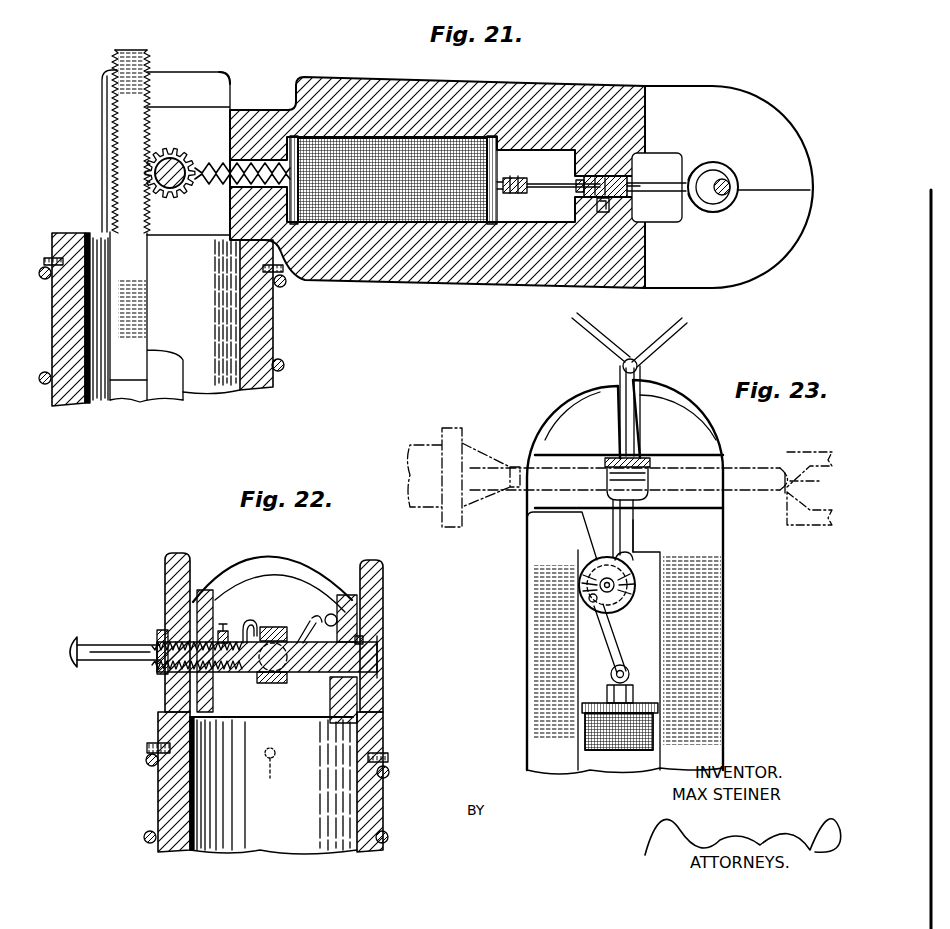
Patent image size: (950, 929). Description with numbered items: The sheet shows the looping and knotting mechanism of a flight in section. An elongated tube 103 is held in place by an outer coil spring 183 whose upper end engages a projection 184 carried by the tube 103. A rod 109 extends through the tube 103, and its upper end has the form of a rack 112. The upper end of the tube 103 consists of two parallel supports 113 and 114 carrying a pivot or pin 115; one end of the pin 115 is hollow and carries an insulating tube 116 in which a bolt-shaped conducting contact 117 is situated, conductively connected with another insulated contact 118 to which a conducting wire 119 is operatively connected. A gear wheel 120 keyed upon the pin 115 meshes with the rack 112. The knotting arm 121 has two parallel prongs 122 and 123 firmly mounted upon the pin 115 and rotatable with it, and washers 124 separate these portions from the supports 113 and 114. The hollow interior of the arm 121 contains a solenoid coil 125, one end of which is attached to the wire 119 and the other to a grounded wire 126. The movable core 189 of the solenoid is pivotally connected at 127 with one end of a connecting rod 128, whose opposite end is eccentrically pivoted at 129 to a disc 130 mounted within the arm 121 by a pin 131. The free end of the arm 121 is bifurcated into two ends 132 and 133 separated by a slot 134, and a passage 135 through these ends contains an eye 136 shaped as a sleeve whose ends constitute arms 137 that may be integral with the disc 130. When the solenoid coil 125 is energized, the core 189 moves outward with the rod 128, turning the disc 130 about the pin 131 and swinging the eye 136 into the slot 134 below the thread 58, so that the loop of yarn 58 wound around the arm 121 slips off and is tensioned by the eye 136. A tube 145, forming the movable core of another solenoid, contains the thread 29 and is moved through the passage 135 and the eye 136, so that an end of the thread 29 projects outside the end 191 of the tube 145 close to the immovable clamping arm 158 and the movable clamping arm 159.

In FIG. 21, the elongated tube 103 is at (268, 330).
In FIG. 22, the elongated tube 103 is at (158, 793).
In FIG. 21, the rod 109 is at (170, 403).
In FIG. 21, the rack 112 is at (115, 110).
In FIG. 21, the parallel support 113 is at (226, 73).
In FIG. 22, the parallel support 113 is at (165, 565).
In FIG. 22, the parallel support 114 is at (383, 580).
In FIG. 22, the pivot or pin 115 is at (378, 658).
In FIG. 22, the insulating tube 116 is at (160, 640).
In FIG. 22, the conducting contact 117 is at (92, 645).
In FIG. 22, the insulated contact 118 is at (232, 628).
In FIG. 21, the conducting wire 119 is at (200, 165).
In FIG. 22, the conducting wire 119 is at (258, 620).
In FIG. 21, the gear wheel 120 is at (178, 192).
In FIG. 22, the gear wheel 120 is at (285, 684).
In FIG. 21, the knotting arm 121 is at (495, 75).
In FIG. 22, the knotting arm 121 is at (285, 552).
In FIG. 23, the knotting arm 121 is at (711, 639).
In FIG. 21, the prong or end portion 122 is at (187, 112).
In FIG. 22, the prong or end portion 122 is at (205, 592).
In FIG. 22, the prong or end portion 123 is at (363, 634).
In FIG. 22, the washers 124 is at (190, 598).
In FIG. 21, the solenoid coil 125 is at (400, 138).
In FIG. 23, the solenoid coil 125 is at (655, 726).
In FIG. 22, the grounded wire 126 is at (318, 618).
In FIG. 21, the pivotal connection 127 is at (514, 194).
In FIG. 23, the pivotal connection 127 is at (630, 674).
In FIG. 21, the connecting rod 128 is at (552, 184).
In FIG. 23, the connecting rod 128 is at (600, 625).
In FIG. 21, the eccentric pivot 129 is at (578, 193).
In FIG. 23, the eccentric pivot 129 is at (589, 598).
In FIG. 21, the disc 130 is at (598, 176).
In FIG. 23, the disc 130 is at (601, 567).
In FIG. 21, the pin 131 is at (603, 212).
In FIG. 23, the pin 131 is at (634, 561).
In FIG. 21, the end 132 is at (760, 97).
In FIG. 23, the end 132 is at (565, 418).
In FIG. 23, the end 133 is at (695, 420).
In FIG. 21, the slot 134 is at (785, 250).
In FIG. 23, the slot 134 is at (618, 390).
In FIG. 23, the passage 135 is at (533, 455).
In FIG. 21, the eye 136 is at (735, 168).
In FIG. 23, the eye 136 is at (607, 456).
In FIG. 21, the arms 137 is at (662, 183).
In FIG. 23, the arms 137 is at (612, 524).
In FIG. 23, the tube 145 is at (470, 440).
In FIG. 23, the immovable arm 158 is at (803, 450).
In FIG. 23, the movable arm 159 is at (802, 527).
In FIG. 23, the thread 29 is at (805, 473).
In FIG. 23, the end of the tube 191 is at (785, 488).
In FIG. 21, the outer coil spring 183 is at (286, 363).
In FIG. 22, the outer coil spring 183 is at (389, 776).
In FIG. 21, the projection 184 is at (50, 256).
In FIG. 22, the projection 184 is at (145, 746).
In FIG. 21, the movable core 189 is at (507, 177).
In FIG. 23, the movable core 189 is at (632, 695).
In FIG. 23, the thread or yarn 58 is at (688, 332).